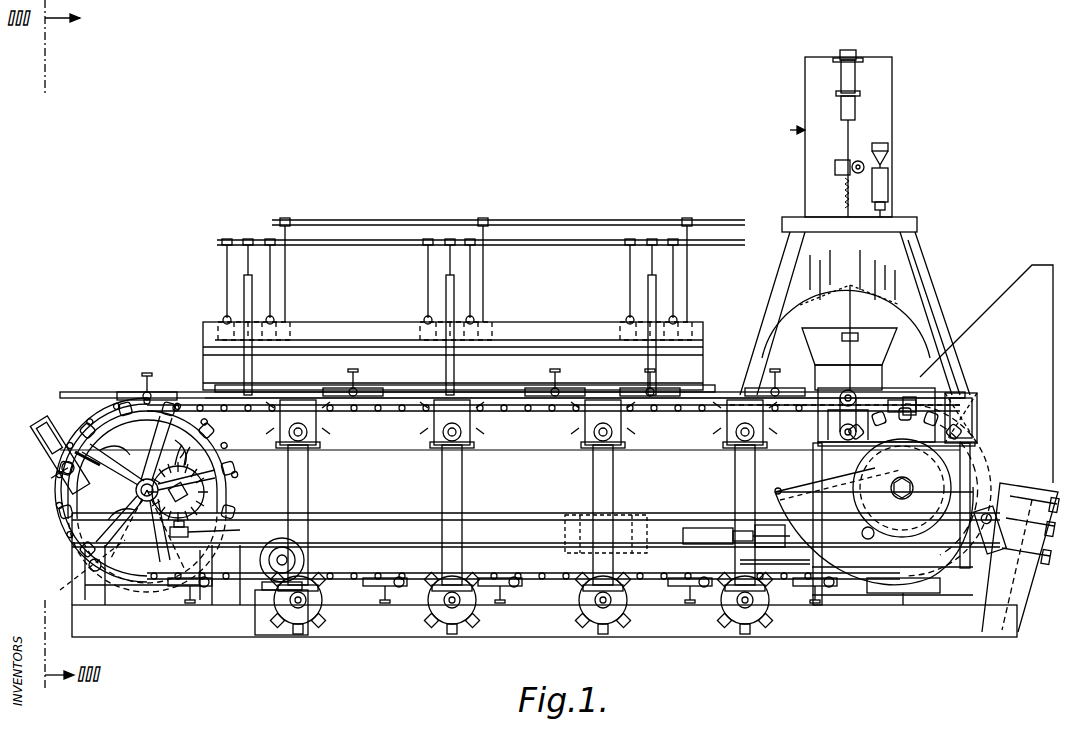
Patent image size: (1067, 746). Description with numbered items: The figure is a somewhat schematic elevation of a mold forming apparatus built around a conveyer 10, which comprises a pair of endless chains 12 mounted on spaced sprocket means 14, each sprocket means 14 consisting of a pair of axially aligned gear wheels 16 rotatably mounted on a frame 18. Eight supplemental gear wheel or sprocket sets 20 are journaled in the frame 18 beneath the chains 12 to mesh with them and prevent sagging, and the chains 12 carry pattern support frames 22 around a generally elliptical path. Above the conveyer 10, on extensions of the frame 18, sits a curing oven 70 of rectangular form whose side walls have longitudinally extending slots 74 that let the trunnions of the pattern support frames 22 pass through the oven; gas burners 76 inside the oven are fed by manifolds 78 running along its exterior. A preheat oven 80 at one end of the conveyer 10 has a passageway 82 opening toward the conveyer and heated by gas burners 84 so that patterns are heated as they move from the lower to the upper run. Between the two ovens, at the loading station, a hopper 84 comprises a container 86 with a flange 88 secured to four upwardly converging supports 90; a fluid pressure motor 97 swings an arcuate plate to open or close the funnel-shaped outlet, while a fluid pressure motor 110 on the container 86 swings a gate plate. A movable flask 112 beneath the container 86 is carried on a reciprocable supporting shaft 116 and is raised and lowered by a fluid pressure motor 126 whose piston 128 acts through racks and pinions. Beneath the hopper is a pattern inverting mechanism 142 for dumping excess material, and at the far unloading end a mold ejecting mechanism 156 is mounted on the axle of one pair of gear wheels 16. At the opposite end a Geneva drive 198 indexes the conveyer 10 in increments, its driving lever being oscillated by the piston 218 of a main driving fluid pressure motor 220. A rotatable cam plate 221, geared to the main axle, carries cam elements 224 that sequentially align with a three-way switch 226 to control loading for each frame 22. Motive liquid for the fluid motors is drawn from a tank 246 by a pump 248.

The conveyer 10 is at (528, 453).
The endless chains 12 is at (215, 392).
The sprocket means 14 is at (218, 445).
The gear wheels 16 is at (115, 425).
The frame 18 is at (165, 620).
The supplemental gear wheel or sprocket sets 20 is at (330, 440).
The pattern support frames 22 is at (135, 392).
The curing oven 70 is at (360, 330).
The longitudinally extending slots 74 is at (710, 392).
The gas burners 76 is at (290, 335).
The manifolds 78 is at (395, 222).
The preheat oven 80 is at (1005, 330).
The passageway 82 is at (1015, 608).
The hopper 84 is at (790, 130).
The container 86 is at (878, 88).
The flange 88 is at (915, 225).
The supports 90 is at (902, 245).
The fluid pressure motor 97 is at (838, 290).
The fluid pressure motor 110 is at (885, 185).
The movable flask 112 is at (885, 339).
The reciprocable supporting shaft 116 is at (852, 345).
The fluid pressure motor 126 is at (850, 68).
The piston 128 is at (852, 130).
The pattern inverting mechanism 142 is at (878, 399).
The mold ejecting mechanism 156 is at (95, 450).
The Geneva drive 198 is at (874, 512).
The piston 218 is at (775, 550).
The main driving fluid pressure motor 220 is at (722, 530).
The rotatable cam plate 221 is at (216, 489).
The cam elements 224 is at (222, 463).
The three-way switch 226 is at (167, 540).
The tank 246 is at (300, 590).
The pump 248 is at (290, 550).